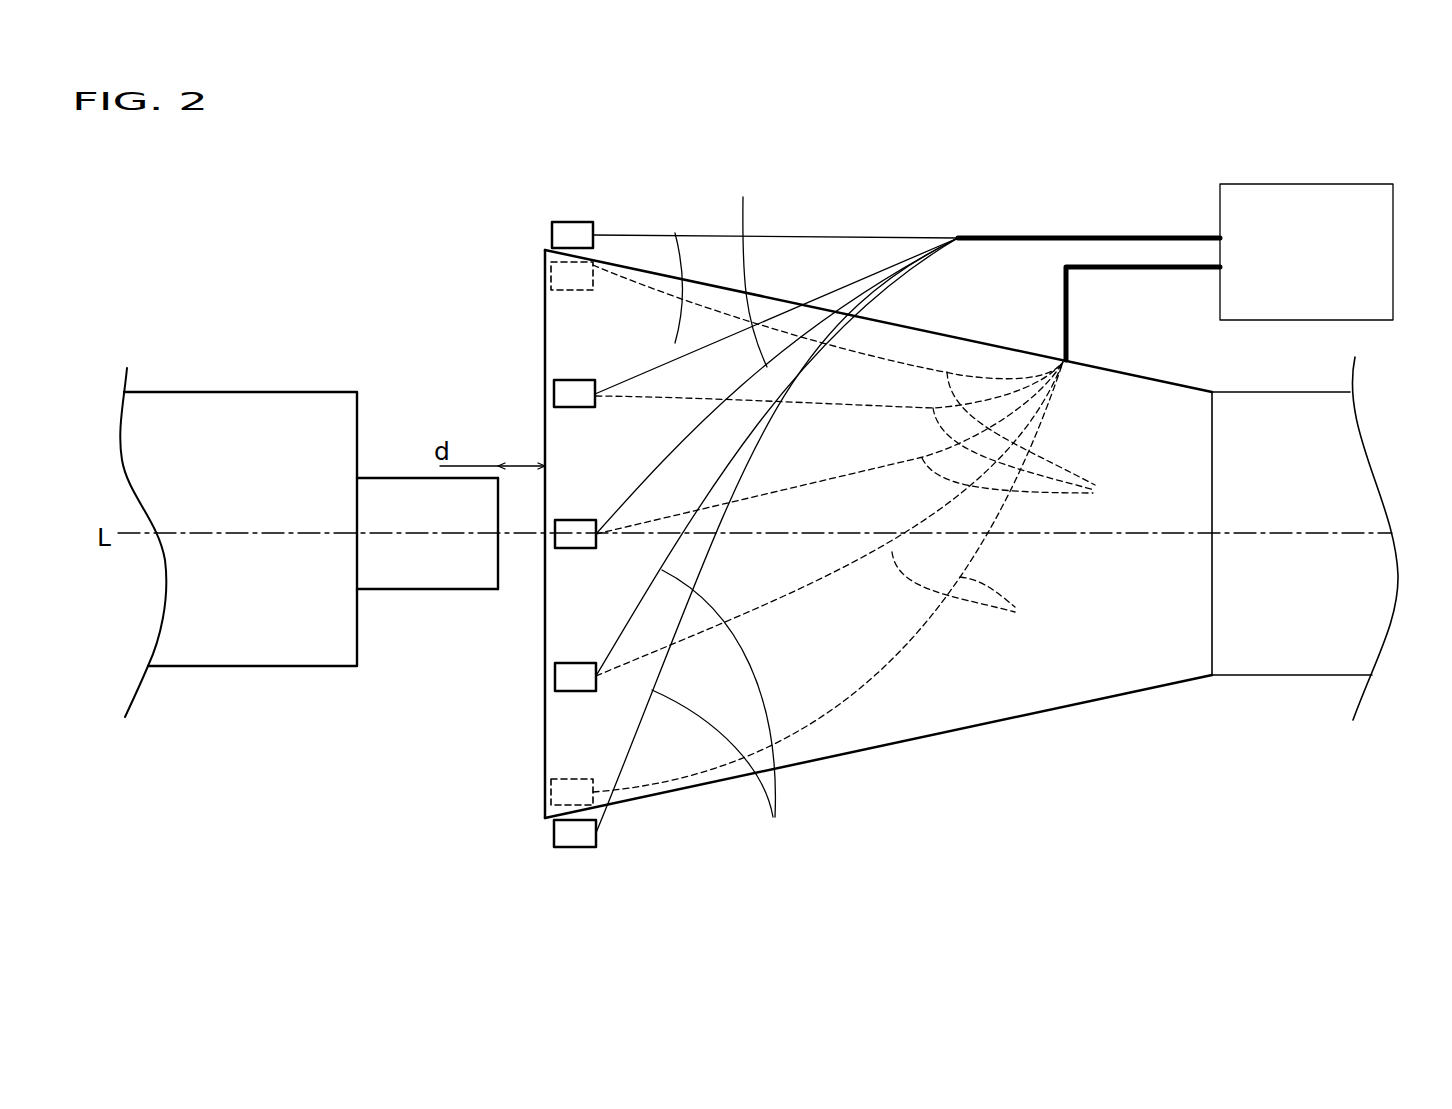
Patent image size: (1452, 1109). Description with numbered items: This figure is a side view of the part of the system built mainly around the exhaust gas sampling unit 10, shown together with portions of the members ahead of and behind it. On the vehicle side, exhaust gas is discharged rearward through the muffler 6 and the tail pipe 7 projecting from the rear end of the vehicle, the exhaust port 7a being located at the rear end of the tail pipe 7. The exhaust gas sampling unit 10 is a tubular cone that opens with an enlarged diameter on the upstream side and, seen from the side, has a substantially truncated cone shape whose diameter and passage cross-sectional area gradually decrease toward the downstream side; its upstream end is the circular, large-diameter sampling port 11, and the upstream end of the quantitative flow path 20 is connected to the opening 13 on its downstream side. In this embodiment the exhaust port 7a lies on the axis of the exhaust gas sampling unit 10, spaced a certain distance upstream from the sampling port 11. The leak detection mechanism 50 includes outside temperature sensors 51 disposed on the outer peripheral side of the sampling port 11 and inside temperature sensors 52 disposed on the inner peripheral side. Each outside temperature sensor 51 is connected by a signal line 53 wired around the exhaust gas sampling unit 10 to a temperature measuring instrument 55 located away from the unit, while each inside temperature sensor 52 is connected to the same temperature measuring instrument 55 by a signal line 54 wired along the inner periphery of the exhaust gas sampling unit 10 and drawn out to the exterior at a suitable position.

The muffler 6 is at (233, 392).
The tail pipe 7 is at (440, 509).
The exhaust port 7a is at (498, 558).
The exhaust gas sampling unit 10 is at (918, 534).
The sampling port 11 is at (545, 743).
The opening 13 is at (1212, 617).
The quantitative flow path 20 is at (1325, 652).
The leak detection mechanism 50 is at (586, 206).
The outside temperature sensors 51 is at (558, 222).
The inside temperature sensors 52 is at (551, 274).
The signal line 53 is at (683, 290).
The signal line 54 is at (1013, 504).
The temperature measuring instrument 55 is at (1393, 251).